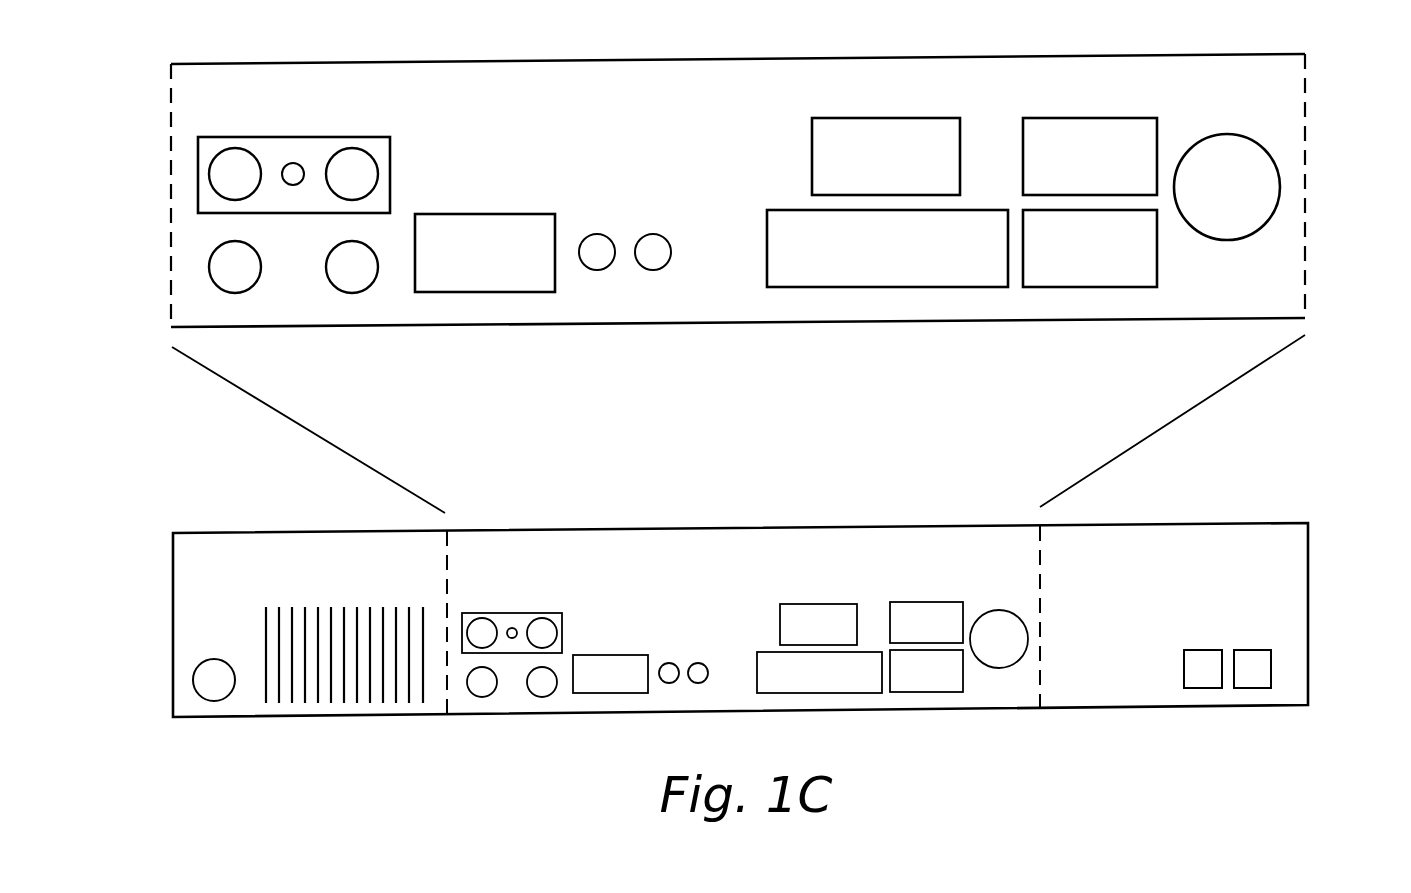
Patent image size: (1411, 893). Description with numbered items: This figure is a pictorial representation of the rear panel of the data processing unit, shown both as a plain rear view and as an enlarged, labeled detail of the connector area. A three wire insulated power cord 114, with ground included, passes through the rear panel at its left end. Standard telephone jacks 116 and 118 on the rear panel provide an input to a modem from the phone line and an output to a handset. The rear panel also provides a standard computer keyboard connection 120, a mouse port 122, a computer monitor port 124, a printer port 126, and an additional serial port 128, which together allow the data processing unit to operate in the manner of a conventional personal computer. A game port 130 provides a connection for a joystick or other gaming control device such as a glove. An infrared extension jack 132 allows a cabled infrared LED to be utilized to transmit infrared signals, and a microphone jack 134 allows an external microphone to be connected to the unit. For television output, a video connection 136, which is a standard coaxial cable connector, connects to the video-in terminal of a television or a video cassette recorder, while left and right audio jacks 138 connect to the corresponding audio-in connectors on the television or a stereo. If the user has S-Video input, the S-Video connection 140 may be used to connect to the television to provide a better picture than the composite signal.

The power cord 114 is at (193, 680).
The telephone jack 116 is at (1203, 650).
The telephone jack 118 is at (1257, 650).
The computer keyboard connection 120 is at (1280, 184).
The mouse port 122 is at (1122, 118).
The computer monitor port 124 is at (923, 118).
The printer port 126 is at (820, 287).
The serial port 128 is at (1075, 287).
The game port 130 is at (497, 177).
The infrared extension jack 132 is at (580, 197).
The microphone jack 134 is at (672, 257).
The video connection 136 is at (378, 174).
The left and right audio jacks 138 is at (213, 197).
The S-Video connection 140 is at (337, 243).